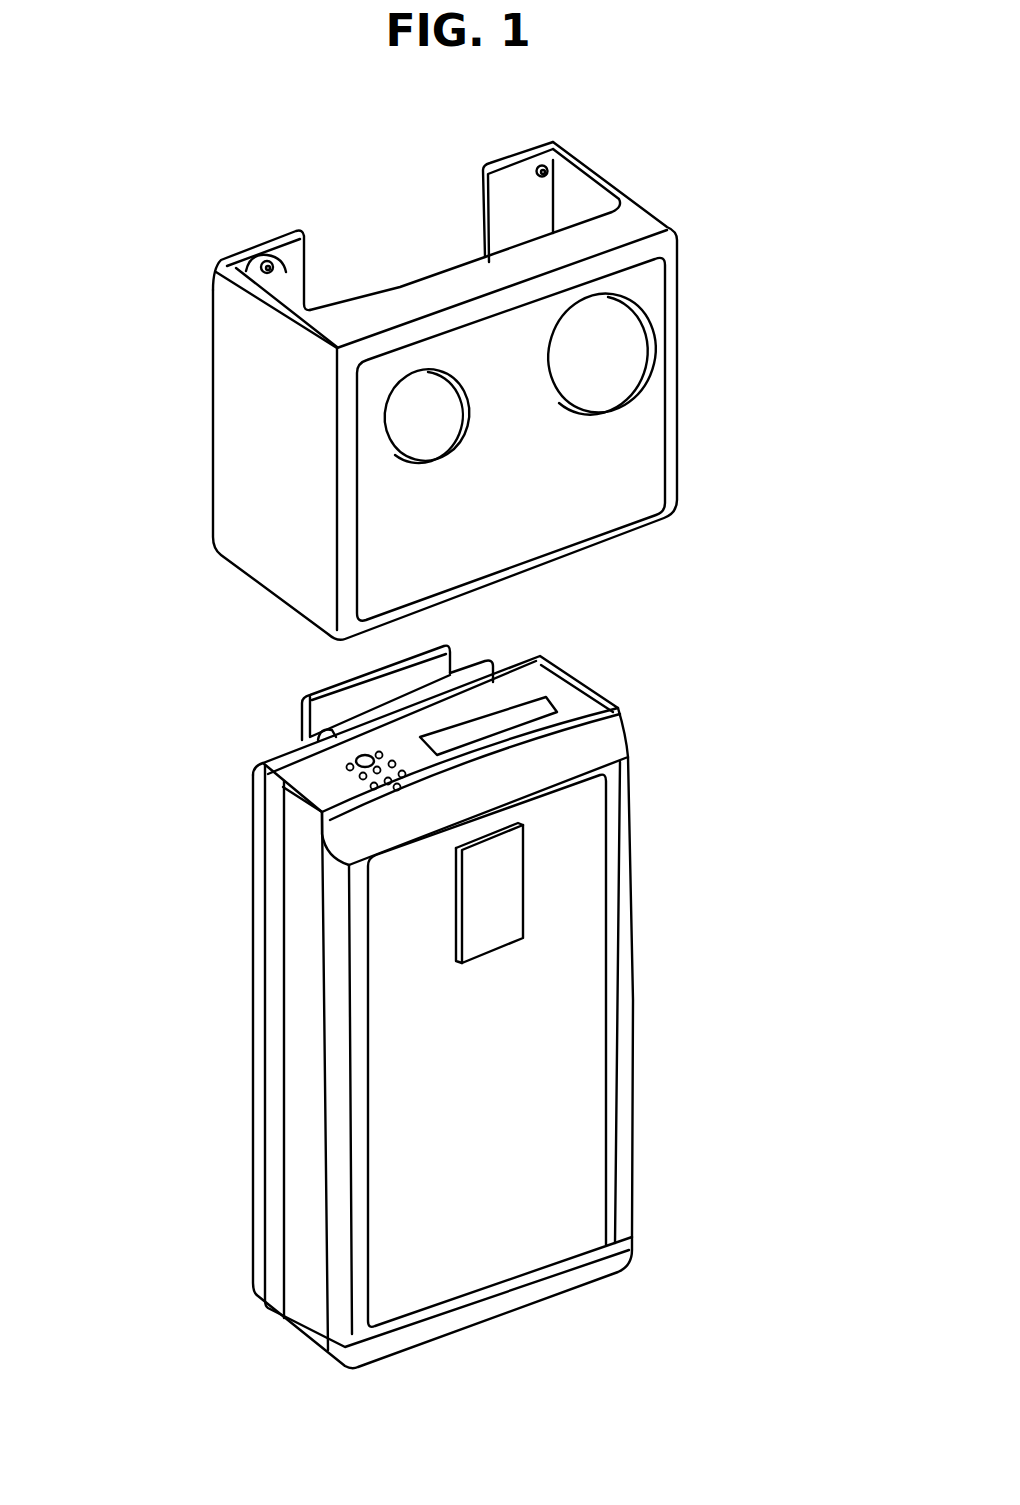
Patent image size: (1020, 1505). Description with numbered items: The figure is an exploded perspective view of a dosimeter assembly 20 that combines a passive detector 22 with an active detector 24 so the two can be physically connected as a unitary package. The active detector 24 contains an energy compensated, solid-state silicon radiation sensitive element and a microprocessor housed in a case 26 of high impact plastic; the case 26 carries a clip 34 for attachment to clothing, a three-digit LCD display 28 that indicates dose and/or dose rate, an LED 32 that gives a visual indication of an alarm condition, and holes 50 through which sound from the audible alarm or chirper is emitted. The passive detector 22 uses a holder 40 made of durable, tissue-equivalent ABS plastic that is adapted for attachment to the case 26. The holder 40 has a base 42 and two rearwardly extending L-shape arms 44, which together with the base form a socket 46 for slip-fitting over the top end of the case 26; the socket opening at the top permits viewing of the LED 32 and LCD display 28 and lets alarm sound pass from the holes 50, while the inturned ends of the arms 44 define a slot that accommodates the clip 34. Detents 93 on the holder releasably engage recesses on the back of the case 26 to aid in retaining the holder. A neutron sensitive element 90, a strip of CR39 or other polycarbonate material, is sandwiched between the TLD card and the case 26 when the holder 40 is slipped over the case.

The dosimeter assembly 20 is at (722, 641).
The passive detector 22 is at (184, 343).
The active detector 24 is at (197, 1144).
The case 26 is at (635, 1012).
The LCD display 28 is at (528, 708).
The LED 32 is at (352, 762).
The clip 34 is at (308, 696).
The holder 40 is at (202, 508).
The base 42 is at (648, 440).
The L-shape arms 44 is at (257, 254).
The socket 46 is at (416, 236).
The holes 50 is at (373, 787).
The neutron sensitive element 90 is at (488, 935).
The detents 93 is at (269, 261).